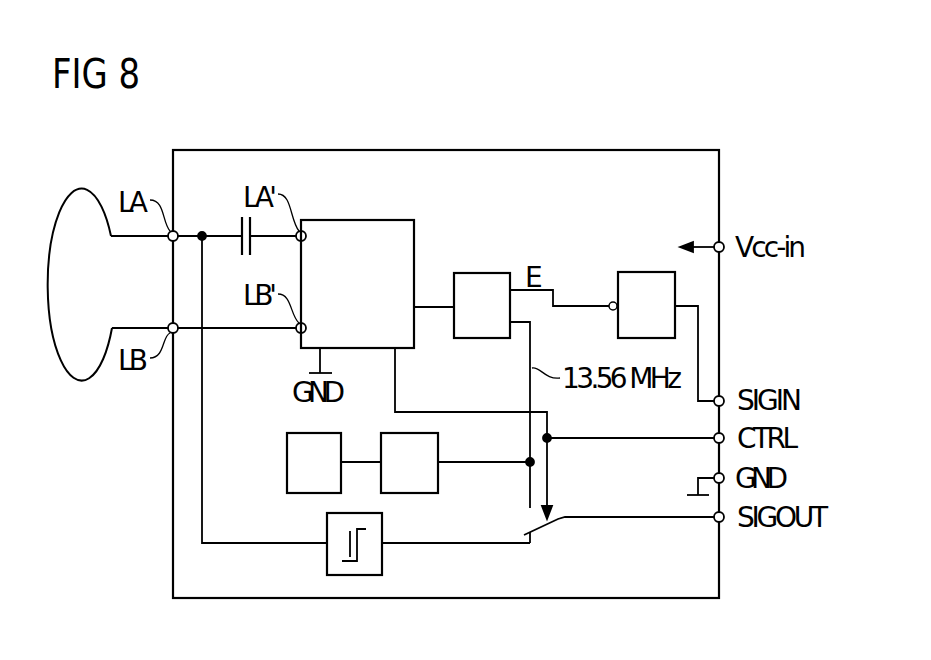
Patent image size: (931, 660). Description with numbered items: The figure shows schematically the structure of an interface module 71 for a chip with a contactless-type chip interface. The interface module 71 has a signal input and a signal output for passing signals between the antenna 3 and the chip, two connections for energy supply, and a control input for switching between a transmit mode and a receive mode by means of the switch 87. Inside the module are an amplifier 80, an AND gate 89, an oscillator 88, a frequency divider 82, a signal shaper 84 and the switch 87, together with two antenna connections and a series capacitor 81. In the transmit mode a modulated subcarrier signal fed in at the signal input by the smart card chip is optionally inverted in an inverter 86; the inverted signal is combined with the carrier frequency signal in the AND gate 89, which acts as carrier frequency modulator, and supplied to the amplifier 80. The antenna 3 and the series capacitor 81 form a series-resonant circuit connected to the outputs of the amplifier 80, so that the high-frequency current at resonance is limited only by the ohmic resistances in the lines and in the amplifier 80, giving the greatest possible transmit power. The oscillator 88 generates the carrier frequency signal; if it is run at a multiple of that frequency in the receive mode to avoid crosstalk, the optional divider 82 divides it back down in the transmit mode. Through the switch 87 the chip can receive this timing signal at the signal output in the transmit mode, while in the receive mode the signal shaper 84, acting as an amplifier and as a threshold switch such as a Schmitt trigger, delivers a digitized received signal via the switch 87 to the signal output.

The antenna 3 is at (49, 268).
The interface module 71 is at (440, 150).
The amplifier 80 is at (358, 220).
The series capacitor 81 is at (238, 224).
The frequency divider 82 is at (438, 480).
The signal shaper 84 is at (327, 528).
The inverter 86 is at (648, 272).
The switch 87 is at (550, 527).
The oscillator 88 is at (287, 460).
The AND gate 89 is at (482, 273).